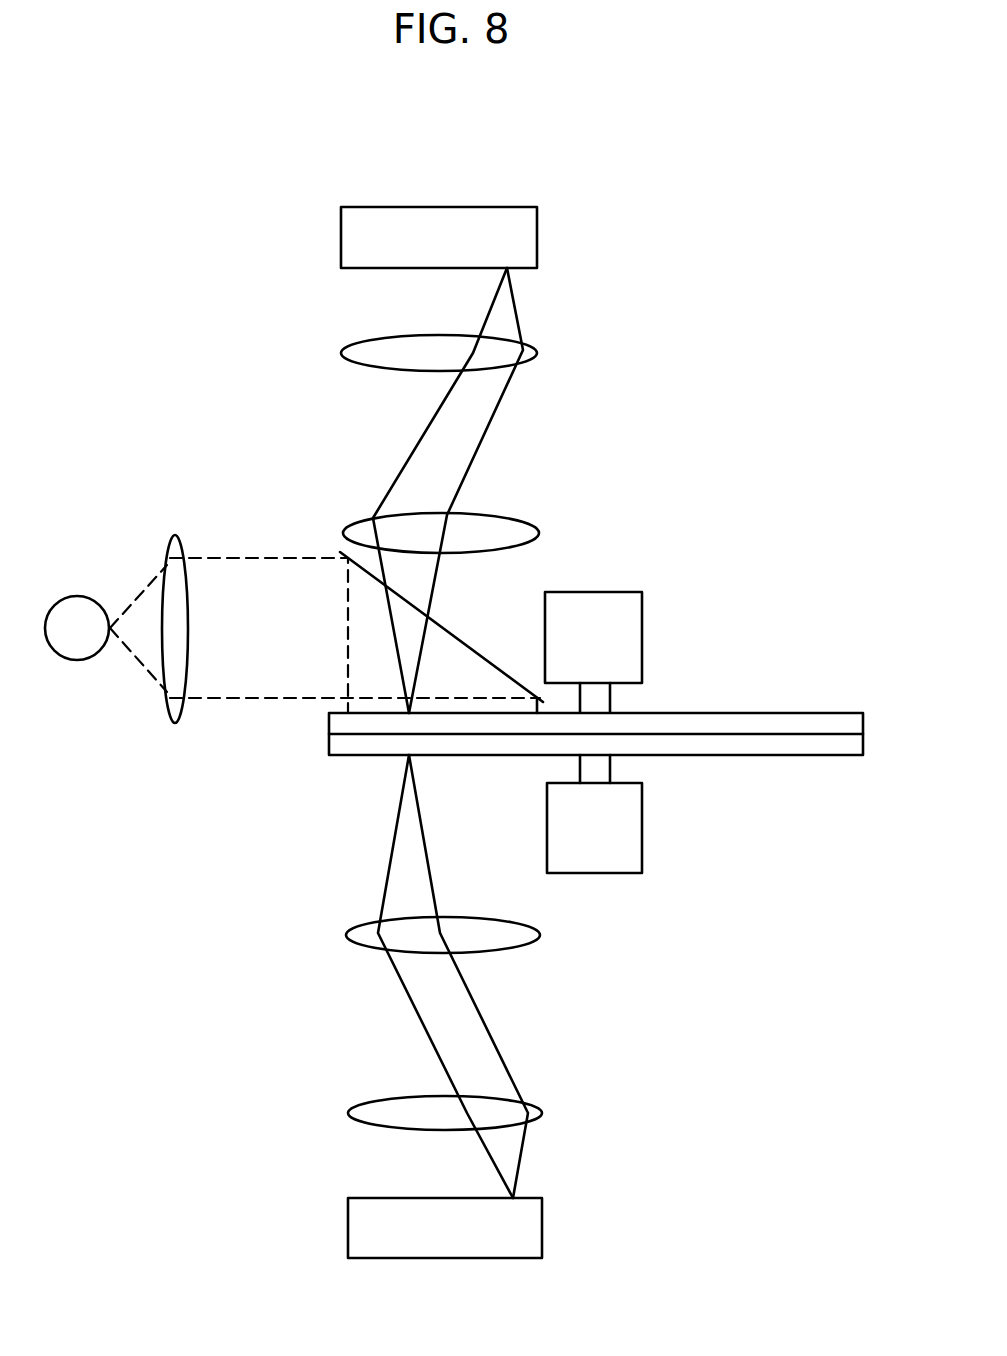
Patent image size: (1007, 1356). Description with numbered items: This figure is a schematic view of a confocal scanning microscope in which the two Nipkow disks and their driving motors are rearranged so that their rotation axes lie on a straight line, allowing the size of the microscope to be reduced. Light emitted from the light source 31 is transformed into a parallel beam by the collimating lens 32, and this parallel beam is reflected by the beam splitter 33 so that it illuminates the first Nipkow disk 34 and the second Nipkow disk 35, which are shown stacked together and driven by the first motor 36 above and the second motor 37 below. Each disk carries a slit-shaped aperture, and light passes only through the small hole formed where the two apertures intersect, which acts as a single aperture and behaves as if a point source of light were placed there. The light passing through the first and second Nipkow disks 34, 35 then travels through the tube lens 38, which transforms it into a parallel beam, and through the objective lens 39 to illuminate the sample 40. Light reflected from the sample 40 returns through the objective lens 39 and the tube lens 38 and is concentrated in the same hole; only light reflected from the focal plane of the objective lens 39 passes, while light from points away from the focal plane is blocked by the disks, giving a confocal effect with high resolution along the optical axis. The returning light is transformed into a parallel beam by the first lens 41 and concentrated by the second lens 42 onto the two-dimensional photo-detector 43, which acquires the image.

The light source 31 is at (83, 607).
The collimating lens 32 is at (180, 537).
The beam splitter 33 is at (457, 633).
The first Nipkow disk 34 is at (745, 718).
The second Nipkow disk 35 is at (775, 745).
The first motor 36 is at (633, 597).
The second motor 37 is at (637, 853).
The tube lens 38 is at (537, 933).
The objective lens 39 is at (540, 1113).
The sample 40 is at (537, 1240).
The first lens 41 is at (530, 527).
The second lens 42 is at (527, 352).
The two-dimensional photo-detector 43 is at (527, 212).